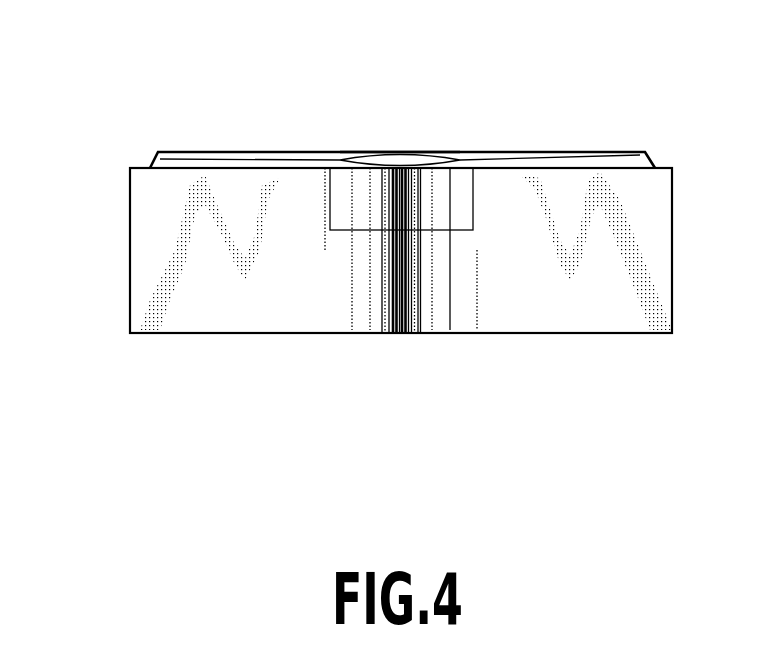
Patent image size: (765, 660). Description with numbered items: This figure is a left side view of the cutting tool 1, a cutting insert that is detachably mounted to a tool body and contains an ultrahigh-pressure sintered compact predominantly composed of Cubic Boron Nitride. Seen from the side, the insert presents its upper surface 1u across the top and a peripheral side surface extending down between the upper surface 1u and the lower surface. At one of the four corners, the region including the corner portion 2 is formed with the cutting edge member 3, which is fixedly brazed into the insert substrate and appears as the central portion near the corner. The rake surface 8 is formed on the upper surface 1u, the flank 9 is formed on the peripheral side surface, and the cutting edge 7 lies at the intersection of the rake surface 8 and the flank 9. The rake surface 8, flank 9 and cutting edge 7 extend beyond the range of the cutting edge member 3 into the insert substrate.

The cutting tool 1 is at (210, 242).
The upper surface 1u is at (393, 153).
The corner portion 2 is at (403, 165).
The cutting edge member 3 is at (428, 205).
The cutting edge 7 is at (323, 168).
The rake surface 8 is at (366, 142).
The flank 9 is at (373, 183).